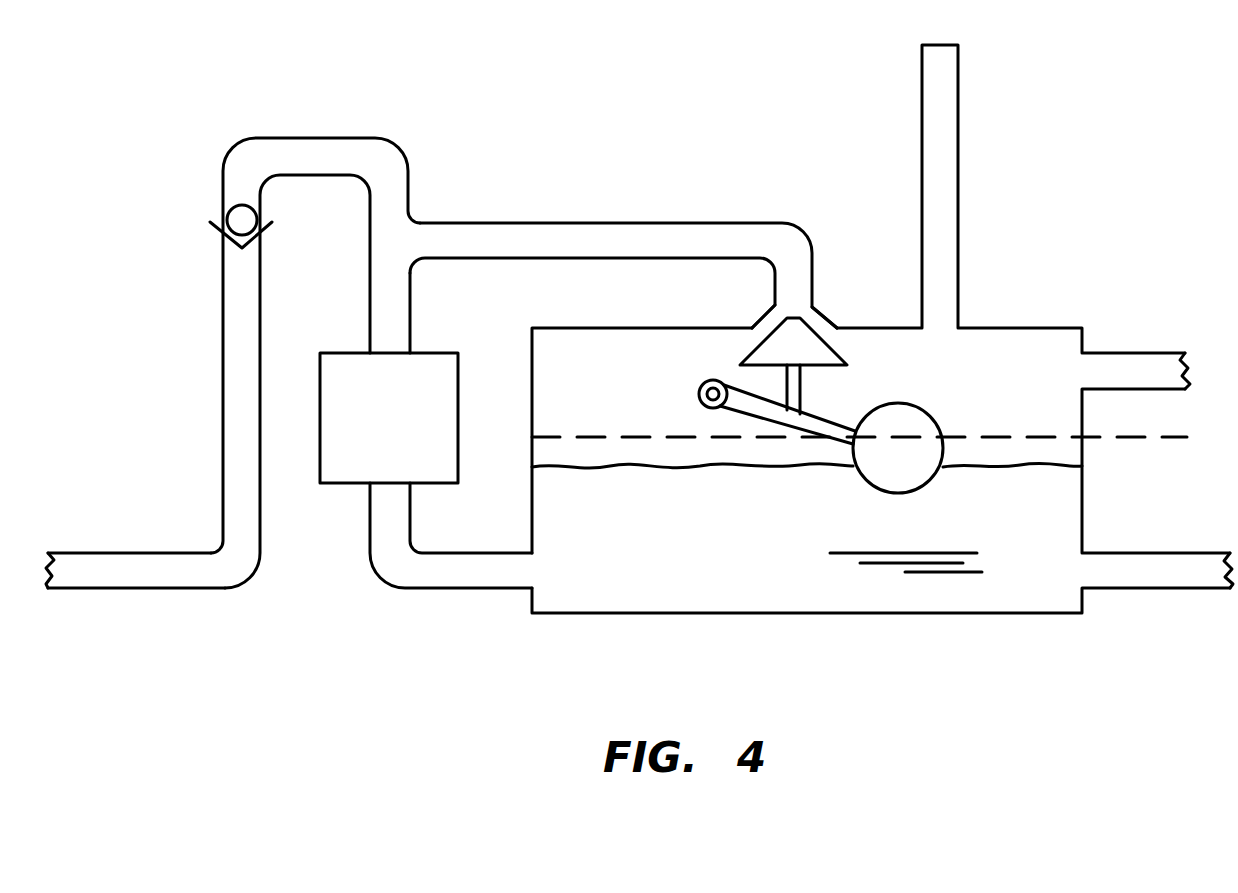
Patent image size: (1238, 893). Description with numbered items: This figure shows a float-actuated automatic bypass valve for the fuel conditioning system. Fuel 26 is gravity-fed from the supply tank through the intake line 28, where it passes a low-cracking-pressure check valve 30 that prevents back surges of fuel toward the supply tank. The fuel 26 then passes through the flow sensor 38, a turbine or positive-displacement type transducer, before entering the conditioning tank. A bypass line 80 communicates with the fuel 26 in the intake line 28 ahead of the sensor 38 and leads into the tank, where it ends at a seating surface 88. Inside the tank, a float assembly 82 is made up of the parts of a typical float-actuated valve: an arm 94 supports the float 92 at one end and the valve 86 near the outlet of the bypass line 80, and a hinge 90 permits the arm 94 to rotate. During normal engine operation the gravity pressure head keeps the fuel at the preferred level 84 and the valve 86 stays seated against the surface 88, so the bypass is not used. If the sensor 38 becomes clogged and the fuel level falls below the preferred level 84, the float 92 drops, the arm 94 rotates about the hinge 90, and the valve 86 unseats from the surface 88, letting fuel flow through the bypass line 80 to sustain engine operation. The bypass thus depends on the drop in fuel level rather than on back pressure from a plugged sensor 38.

The fuel 26 is at (350, 142).
The intake line 28 is at (85, 552).
The check valve 30 is at (223, 218).
The flow sensor 38 is at (350, 485).
The bypass line 80 is at (640, 222).
The float assembly 82 is at (912, 398).
The preferred fuel level 84 is at (1170, 437).
The valve 86 is at (832, 345).
The surface 88 is at (815, 310).
The hinge 90 is at (702, 387).
The float 92 is at (932, 412).
The arm 94 is at (813, 415).